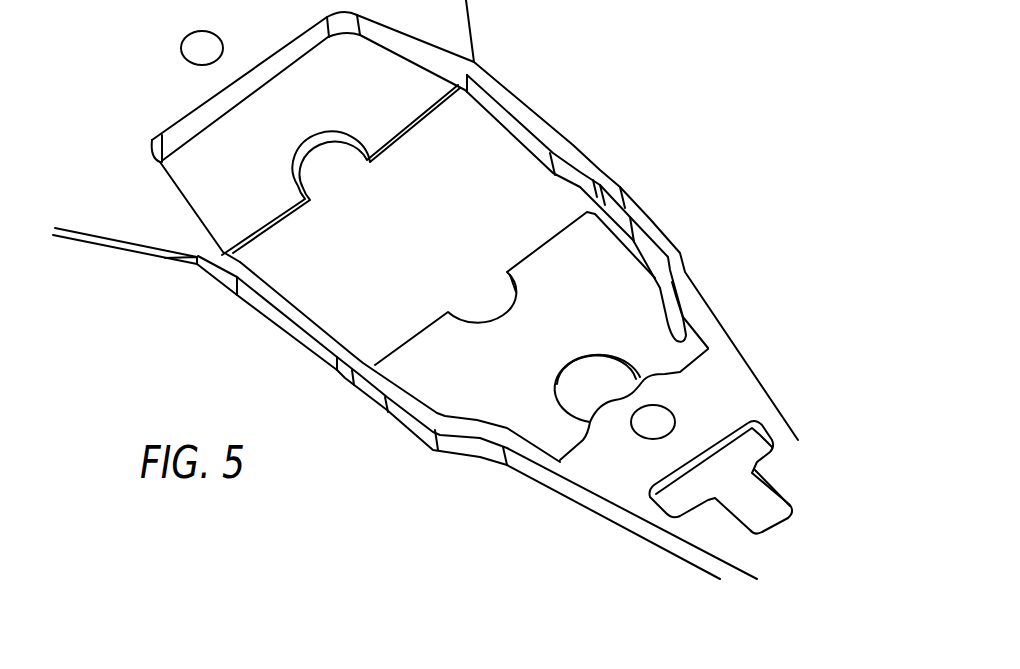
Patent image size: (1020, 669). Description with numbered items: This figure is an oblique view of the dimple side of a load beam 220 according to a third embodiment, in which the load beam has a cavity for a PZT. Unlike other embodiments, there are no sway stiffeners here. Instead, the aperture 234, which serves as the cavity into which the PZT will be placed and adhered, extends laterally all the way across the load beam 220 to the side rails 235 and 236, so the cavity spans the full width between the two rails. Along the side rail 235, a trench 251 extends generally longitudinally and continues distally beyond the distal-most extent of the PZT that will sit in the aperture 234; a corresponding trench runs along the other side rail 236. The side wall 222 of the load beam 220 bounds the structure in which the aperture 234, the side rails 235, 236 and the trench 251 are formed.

The support tray 220 is at (148, 220).
The side wall 222 is at (463, 133).
The aperture 234 is at (552, 203).
The side rail 235 is at (532, 123).
The side rail 236 is at (297, 313).
The trench 251 is at (637, 220).